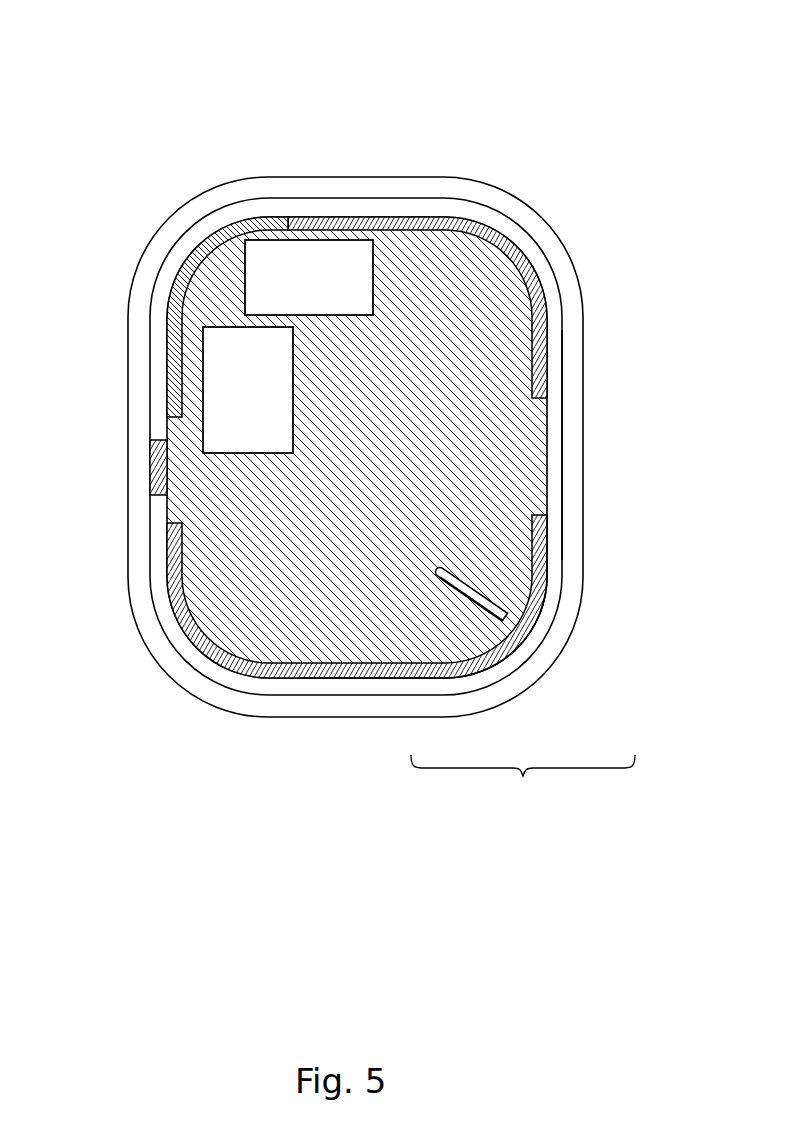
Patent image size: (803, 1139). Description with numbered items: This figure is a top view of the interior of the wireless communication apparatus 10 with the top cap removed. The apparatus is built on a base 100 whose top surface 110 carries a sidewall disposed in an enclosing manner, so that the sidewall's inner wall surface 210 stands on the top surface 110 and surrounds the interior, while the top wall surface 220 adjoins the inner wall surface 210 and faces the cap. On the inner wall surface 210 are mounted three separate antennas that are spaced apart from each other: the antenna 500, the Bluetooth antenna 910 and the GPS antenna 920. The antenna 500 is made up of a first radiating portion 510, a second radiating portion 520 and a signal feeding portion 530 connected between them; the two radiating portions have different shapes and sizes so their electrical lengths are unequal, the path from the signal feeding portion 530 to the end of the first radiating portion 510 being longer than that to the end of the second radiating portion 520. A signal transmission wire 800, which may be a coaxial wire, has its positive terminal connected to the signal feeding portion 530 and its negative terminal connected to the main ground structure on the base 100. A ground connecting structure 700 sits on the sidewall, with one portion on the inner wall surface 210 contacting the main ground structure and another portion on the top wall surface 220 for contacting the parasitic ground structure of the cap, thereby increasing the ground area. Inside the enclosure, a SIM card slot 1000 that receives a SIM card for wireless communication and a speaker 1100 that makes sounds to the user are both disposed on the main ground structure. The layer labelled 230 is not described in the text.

The wireless communication apparatus 10 is at (600, 76).
The base 100 is at (573, 278).
The top surface 110 is at (527, 236).
The inner wall surface 210 is at (547, 477).
The top wall surface 220 is at (565, 387).
The third layer 230 is at (553, 433).
The antenna 500 is at (467, 665).
The first radiating portion 510 is at (400, 684).
The second radiating portion 520 is at (545, 560).
The signal feeding portion 530 is at (508, 643).
The ground connecting structure 700 is at (163, 470).
The signal transmission wire 800 is at (459, 593).
The Bluetooth antenna 910 is at (200, 266).
The GPS antenna 920 is at (416, 228).
The SIM card slot 1000 is at (220, 373).
The speaker 1100 is at (320, 252).